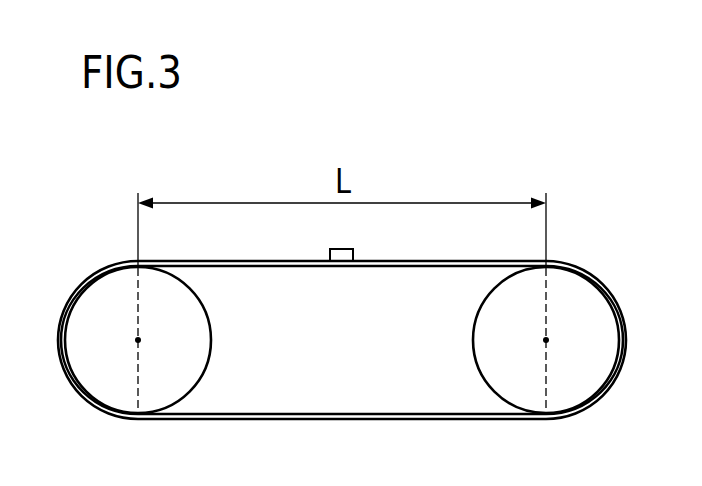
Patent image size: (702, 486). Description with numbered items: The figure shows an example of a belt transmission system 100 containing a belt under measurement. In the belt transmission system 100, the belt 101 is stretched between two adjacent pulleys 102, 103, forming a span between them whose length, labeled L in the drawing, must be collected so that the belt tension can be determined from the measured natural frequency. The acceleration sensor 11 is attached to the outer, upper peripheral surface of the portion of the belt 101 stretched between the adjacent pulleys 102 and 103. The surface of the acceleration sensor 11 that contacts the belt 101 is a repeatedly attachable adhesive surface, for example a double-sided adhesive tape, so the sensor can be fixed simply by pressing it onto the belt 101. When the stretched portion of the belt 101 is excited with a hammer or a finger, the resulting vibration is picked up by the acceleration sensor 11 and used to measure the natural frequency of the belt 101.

The belt transmission system 100 is at (90, 232).
The belt 101 is at (297, 268).
The pulley 102 is at (212, 340).
The pulley 103 is at (473, 340).
The acceleration sensor 11 is at (354, 257).